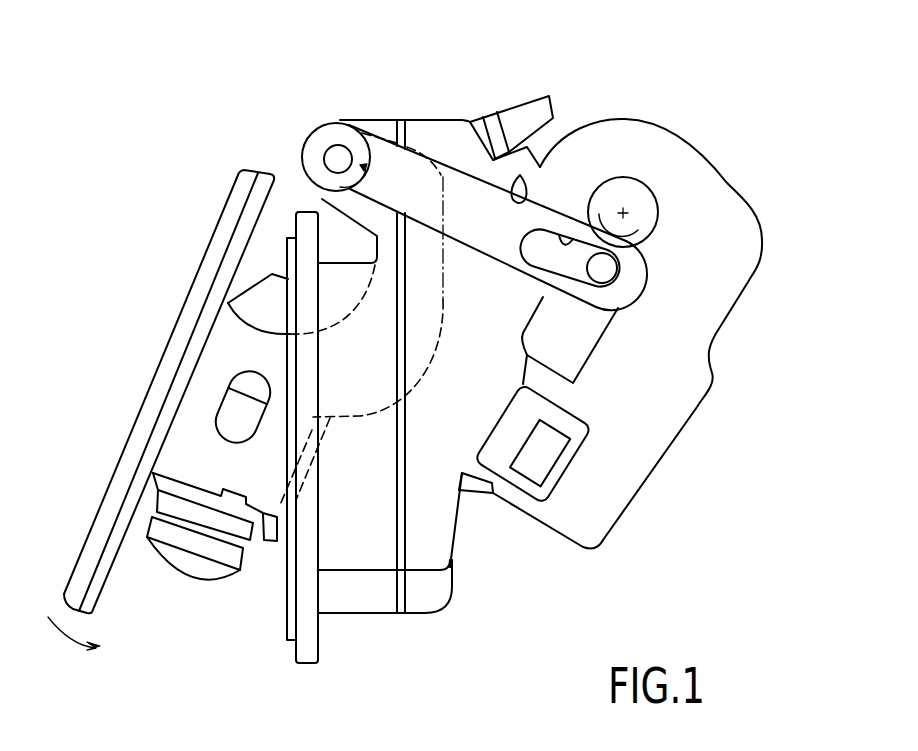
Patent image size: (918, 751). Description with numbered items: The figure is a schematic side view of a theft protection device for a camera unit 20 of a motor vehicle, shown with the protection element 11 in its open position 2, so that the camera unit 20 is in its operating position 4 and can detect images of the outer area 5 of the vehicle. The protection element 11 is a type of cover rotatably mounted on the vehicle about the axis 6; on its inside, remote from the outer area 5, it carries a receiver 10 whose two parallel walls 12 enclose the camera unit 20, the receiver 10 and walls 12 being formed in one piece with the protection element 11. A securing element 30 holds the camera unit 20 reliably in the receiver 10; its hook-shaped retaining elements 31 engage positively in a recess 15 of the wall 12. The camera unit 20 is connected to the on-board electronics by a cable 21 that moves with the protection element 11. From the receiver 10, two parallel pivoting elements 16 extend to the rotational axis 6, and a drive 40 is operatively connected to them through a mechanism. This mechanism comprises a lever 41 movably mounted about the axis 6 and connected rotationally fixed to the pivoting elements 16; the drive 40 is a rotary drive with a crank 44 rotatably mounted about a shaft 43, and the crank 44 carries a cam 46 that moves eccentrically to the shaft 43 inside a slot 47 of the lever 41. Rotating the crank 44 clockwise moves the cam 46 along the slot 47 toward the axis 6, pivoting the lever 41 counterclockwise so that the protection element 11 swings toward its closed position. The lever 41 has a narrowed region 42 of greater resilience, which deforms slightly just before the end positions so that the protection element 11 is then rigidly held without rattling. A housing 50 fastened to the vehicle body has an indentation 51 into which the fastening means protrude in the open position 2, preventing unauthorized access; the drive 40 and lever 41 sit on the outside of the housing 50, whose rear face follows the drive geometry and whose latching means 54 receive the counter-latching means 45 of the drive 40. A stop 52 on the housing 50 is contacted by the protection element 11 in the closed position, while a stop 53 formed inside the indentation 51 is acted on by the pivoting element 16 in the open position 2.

The open position 2 is at (187, 41).
The operating position 4 is at (433, 363).
The outer area 5 is at (80, 243).
The rotational axis 6 is at (338, 152).
The receiver 10 is at (222, 360).
The protection element 11 is at (112, 482).
The walls 12 is at (160, 407).
The recess 15 is at (227, 482).
The pivoting elements 16 is at (372, 371).
The camera unit 20 is at (227, 560).
The cable 21 is at (531, 112).
The securing element 30 is at (275, 541).
The retaining elements 31 is at (236, 524).
The drive 40 is at (729, 207).
The lever 41 is at (500, 243).
The region 42 is at (414, 158).
The shaft 43 is at (624, 212).
The crank 44 is at (640, 240).
The counter-latching means 45 is at (530, 463).
The cam 46 is at (598, 270).
The slot 47 is at (565, 236).
The housing 50 is at (453, 547).
The indentation 51 is at (366, 544).
The stop 52 is at (291, 625).
The stop 53 is at (318, 197).
The latching means 54 is at (502, 456).